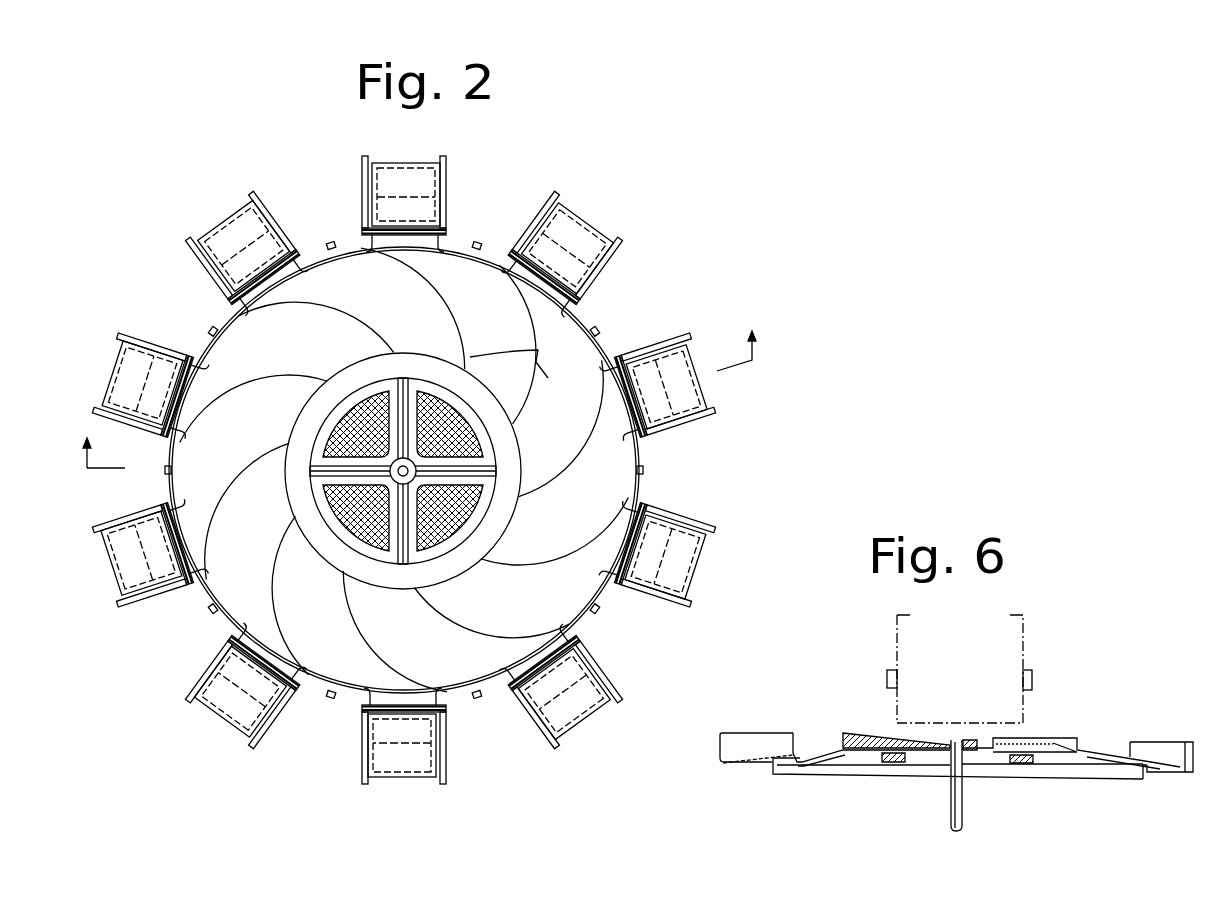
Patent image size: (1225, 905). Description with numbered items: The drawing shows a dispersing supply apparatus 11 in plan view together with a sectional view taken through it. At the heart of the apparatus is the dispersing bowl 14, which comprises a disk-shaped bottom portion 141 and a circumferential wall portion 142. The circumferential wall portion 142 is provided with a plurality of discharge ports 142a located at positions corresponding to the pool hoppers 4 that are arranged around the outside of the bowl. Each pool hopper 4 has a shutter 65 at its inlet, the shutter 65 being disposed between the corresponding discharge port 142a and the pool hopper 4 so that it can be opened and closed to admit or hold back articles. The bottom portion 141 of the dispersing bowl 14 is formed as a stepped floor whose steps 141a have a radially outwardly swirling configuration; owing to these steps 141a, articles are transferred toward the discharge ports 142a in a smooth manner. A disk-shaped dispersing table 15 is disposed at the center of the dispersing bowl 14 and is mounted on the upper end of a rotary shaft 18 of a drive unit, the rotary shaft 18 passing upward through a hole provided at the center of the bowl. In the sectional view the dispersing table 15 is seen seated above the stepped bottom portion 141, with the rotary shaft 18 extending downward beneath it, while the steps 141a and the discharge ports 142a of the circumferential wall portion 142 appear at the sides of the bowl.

In FIG. 2, the dispersing supply apparatus 11 is at (615, 322).
In FIG. 2, the pool hopper 4 is at (214, 232).
In FIG. 2, the shutter 65 is at (260, 267).
In FIG. 2, the discharge port 142a is at (240, 307).
In FIG. 6, the discharge port 142a is at (818, 743).
In FIG. 2, the circumferential wall portion 142 is at (640, 432).
In FIG. 6, the circumferential wall portion 142 is at (722, 748).
In FIG. 2, the bottom portion 141 is at (615, 492).
In FIG. 6, the bottom portion 141 is at (832, 766).
In FIG. 2, the step 141a is at (536, 364).
In FIG. 6, the step 141a is at (805, 748).
In FIG. 2, the dispersing table 15 is at (455, 565).
In FIG. 6, the dispersing table 15 is at (883, 732).
In FIG. 2, the dispersing bowl 14 is at (603, 597).
In FIG. 6, the dispersing bowl 14 is at (1188, 743).
In FIG. 6, the rotary shaft 18 is at (963, 806).